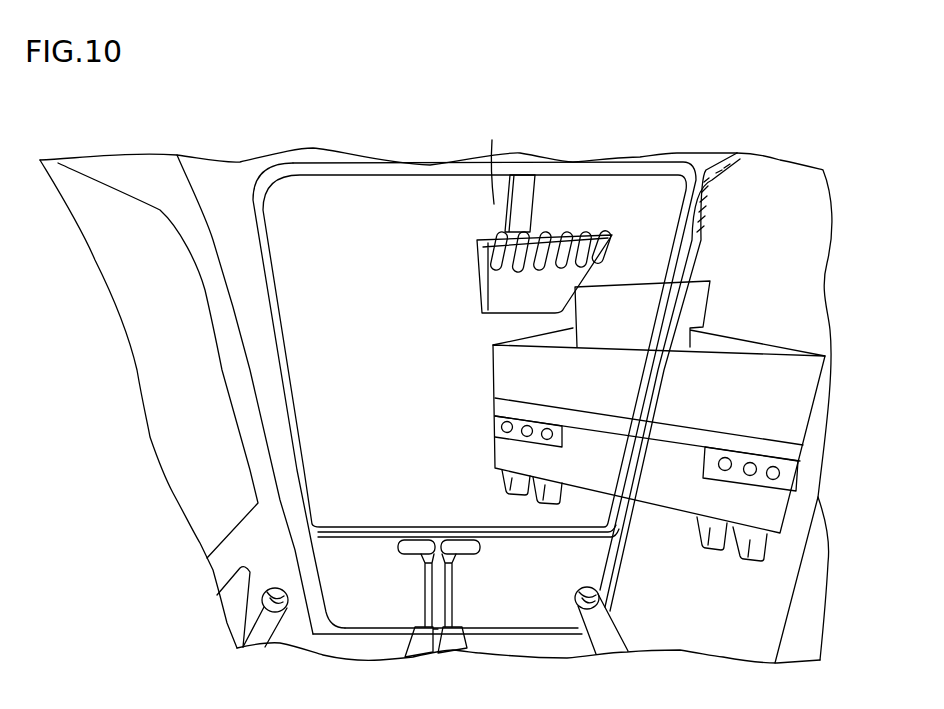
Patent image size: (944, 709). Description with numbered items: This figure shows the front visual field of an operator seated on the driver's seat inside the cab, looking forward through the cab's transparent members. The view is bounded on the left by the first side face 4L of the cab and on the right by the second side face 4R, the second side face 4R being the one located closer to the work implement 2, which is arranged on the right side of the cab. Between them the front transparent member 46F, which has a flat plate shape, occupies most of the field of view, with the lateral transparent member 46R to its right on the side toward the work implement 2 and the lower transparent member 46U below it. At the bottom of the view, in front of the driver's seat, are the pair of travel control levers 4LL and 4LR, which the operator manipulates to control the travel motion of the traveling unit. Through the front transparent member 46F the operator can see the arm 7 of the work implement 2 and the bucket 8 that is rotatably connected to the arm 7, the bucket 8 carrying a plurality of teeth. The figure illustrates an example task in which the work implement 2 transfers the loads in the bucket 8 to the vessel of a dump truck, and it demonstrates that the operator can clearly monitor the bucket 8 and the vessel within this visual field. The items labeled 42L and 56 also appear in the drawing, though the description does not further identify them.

The work implement 2 is at (500, 188).
The arm 7 is at (528, 197).
The bucket 8 is at (476, 262).
The first side face 4L is at (160, 370).
The second side face 4R is at (800, 308).
The left pillar 42L is at (217, 295).
The front transparent member 46F is at (382, 213).
The lateral transparent member 46R is at (800, 243).
The lower transparent member 46U is at (355, 607).
The travel control lever 4LL is at (412, 553).
The travel control lever 4LR is at (468, 553).
The pipe 56 is at (597, 608).